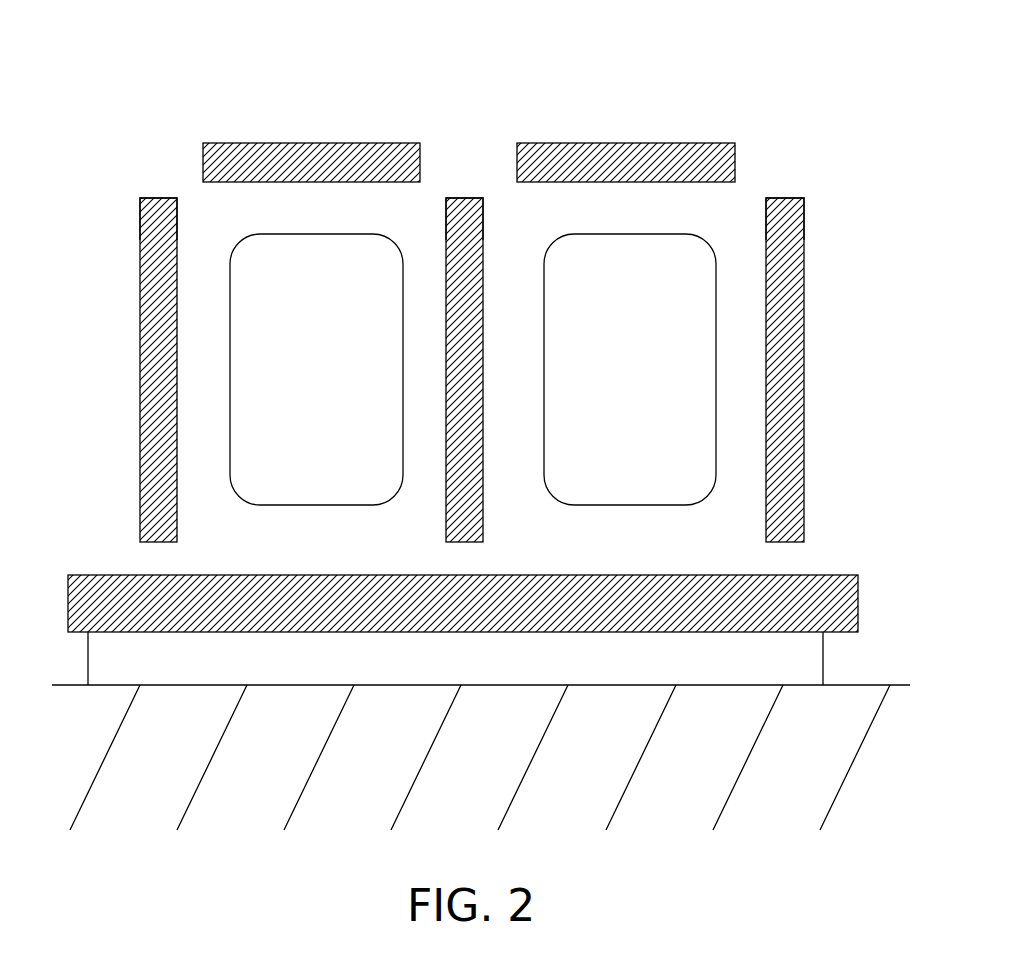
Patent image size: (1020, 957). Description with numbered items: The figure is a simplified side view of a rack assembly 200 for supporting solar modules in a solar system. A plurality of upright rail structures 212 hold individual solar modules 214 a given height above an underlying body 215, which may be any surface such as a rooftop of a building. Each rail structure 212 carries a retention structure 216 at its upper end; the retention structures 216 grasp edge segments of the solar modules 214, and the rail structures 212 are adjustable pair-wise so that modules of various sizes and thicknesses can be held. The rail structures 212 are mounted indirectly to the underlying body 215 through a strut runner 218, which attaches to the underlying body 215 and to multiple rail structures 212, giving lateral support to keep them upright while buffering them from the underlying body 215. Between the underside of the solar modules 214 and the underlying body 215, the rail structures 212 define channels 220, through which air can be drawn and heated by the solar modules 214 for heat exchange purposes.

The substrate support system 200 is at (480, 424).
The rail structure 212 is at (140, 373).
The solar module 214 is at (538, 130).
The underlying body 215 is at (487, 820).
The retention structure 216 is at (140, 230).
The strut runner 218 is at (87, 575).
The channel 220 is at (338, 483).